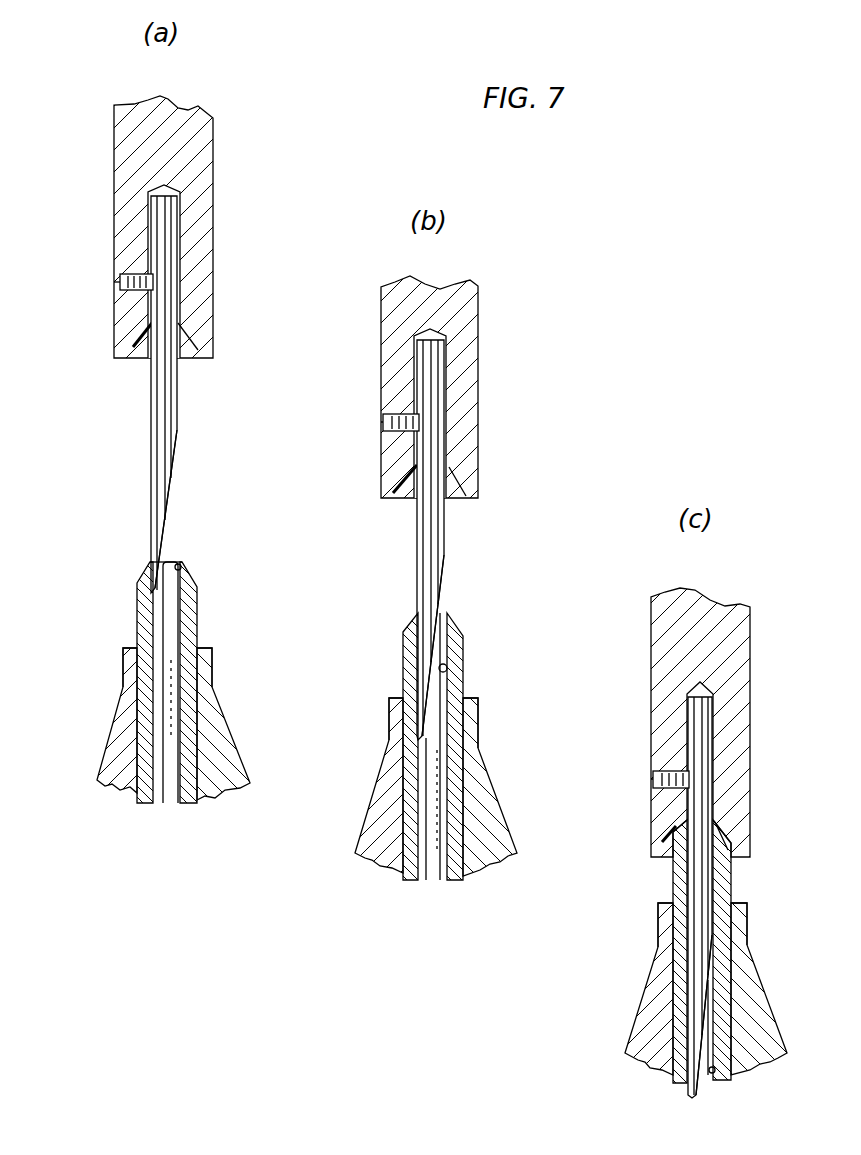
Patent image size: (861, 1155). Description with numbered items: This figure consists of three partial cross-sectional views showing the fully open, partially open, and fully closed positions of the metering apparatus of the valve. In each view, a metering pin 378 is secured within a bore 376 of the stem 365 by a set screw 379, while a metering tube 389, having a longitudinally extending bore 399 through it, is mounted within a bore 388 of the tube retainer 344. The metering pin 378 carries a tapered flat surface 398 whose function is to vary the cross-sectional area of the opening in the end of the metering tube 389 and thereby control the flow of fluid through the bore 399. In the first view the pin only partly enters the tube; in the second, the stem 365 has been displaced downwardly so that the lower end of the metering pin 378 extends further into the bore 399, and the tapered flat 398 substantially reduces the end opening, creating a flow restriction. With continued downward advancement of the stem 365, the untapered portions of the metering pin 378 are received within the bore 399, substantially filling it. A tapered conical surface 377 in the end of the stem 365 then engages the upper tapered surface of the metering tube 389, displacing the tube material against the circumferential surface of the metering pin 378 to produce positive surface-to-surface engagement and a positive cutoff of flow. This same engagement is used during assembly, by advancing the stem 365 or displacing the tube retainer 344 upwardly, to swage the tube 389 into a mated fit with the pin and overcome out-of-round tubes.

The tube retainer 344 is at (117, 738).
The stem 365 is at (200, 180).
The bore 376 is at (152, 315).
The tapered conical surface 377 is at (189, 355).
The metering pin 378 is at (153, 447).
The set screw 379 is at (119, 284).
The bore 388 is at (143, 652).
The metering tube 389 is at (145, 600).
The tapered flat surface 398 is at (174, 484).
The bore 399 is at (176, 558).